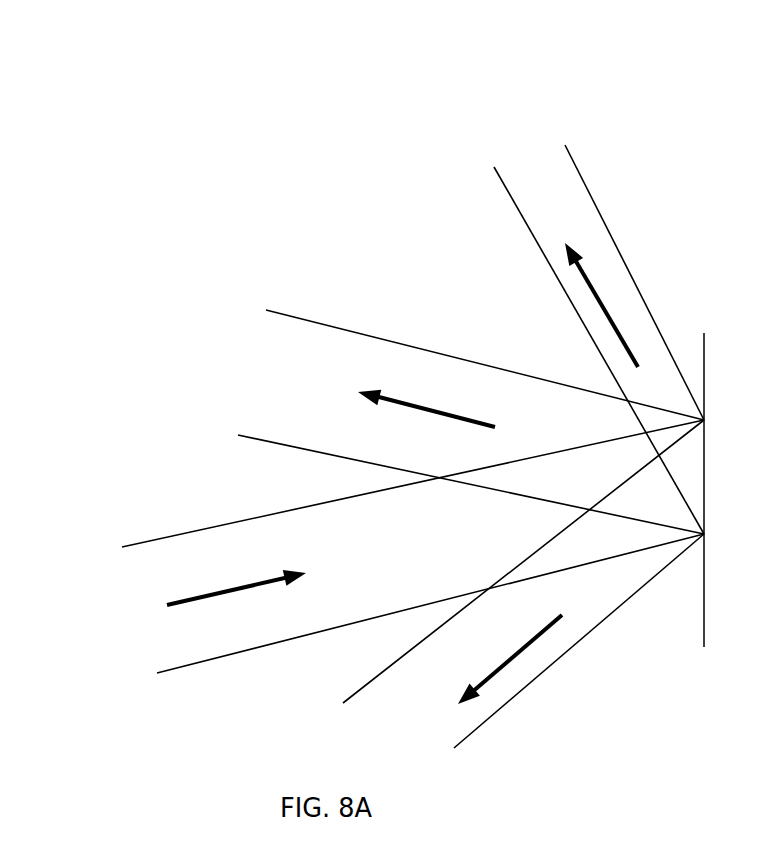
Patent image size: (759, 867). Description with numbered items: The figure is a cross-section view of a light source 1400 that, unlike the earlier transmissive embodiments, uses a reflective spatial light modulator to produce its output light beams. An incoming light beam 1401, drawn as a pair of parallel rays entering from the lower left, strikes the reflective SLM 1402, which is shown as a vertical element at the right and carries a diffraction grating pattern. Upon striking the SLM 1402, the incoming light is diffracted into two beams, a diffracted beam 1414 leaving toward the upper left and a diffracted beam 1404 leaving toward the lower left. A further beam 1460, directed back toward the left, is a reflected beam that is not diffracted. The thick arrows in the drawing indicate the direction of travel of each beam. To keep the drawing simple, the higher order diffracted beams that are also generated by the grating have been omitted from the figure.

The light source 1400 is at (281, 126).
The incoming light beam 1401 is at (400, 546).
The reflective SLM 1402 is at (717, 513).
The diffracted beam 1404 is at (523, 584).
The diffracted beam 1414 is at (599, 339).
The reflected beam 1460 is at (471, 422).